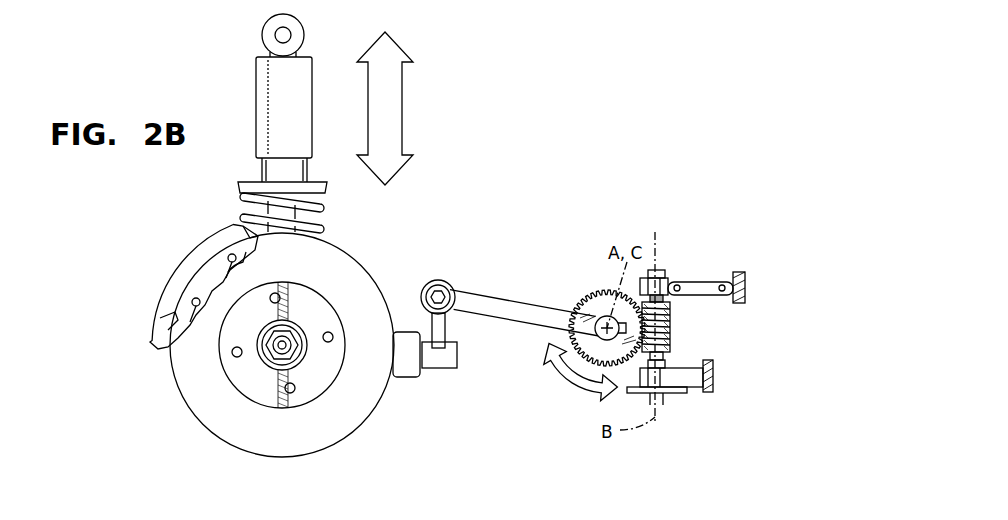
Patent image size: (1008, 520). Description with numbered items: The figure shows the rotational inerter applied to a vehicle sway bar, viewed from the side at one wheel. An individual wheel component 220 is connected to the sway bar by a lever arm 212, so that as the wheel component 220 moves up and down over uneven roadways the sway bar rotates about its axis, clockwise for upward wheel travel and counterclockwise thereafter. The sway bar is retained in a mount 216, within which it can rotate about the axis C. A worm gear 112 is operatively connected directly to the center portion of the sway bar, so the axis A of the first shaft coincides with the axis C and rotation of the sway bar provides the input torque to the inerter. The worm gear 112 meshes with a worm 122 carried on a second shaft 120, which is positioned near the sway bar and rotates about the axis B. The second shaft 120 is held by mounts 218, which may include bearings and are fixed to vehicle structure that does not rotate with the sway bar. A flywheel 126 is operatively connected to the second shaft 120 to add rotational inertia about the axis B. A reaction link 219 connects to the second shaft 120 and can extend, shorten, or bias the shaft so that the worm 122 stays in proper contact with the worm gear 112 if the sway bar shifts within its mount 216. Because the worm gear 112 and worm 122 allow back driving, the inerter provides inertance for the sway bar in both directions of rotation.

The worm gear 112 is at (605, 290).
The second shaft 120 is at (668, 272).
The worm 122 is at (668, 315).
The flywheel 126 is at (673, 393).
The lever arm 212 is at (512, 313).
The mount 216 is at (553, 378).
The mount 218 is at (697, 393).
The reaction link 219 is at (702, 283).
The individual wheel component 220 is at (132, 262).